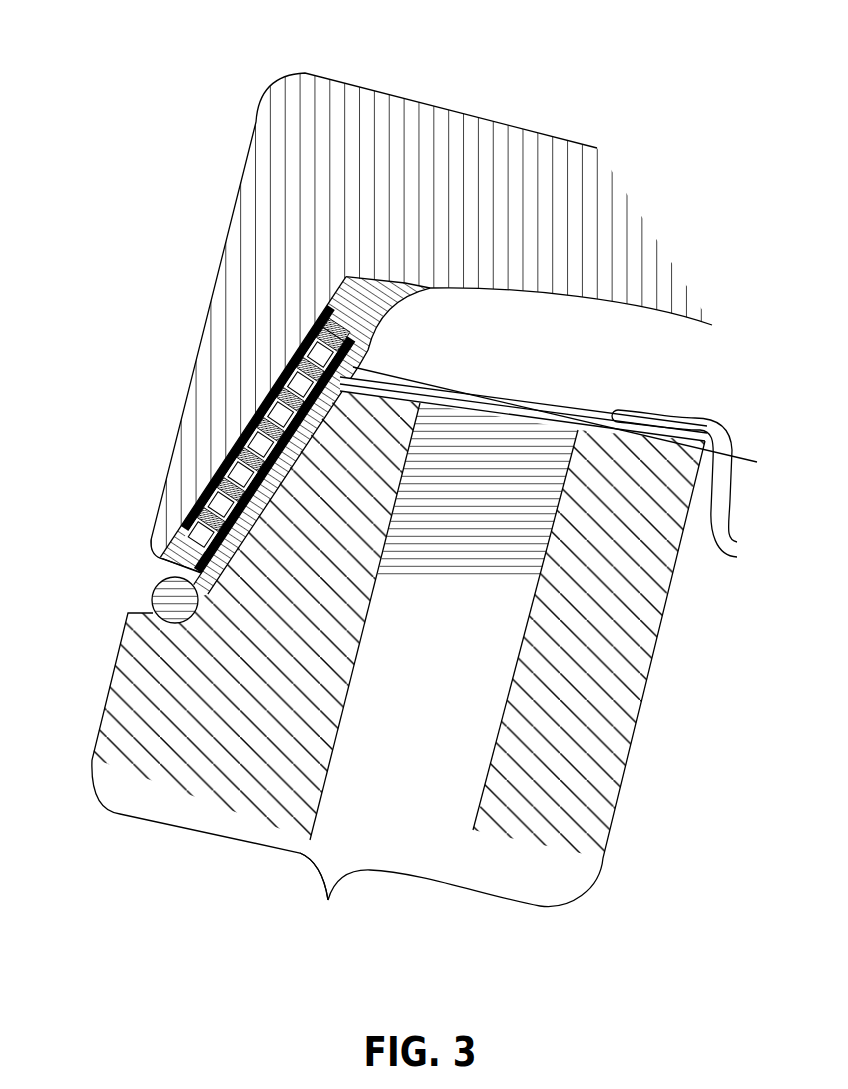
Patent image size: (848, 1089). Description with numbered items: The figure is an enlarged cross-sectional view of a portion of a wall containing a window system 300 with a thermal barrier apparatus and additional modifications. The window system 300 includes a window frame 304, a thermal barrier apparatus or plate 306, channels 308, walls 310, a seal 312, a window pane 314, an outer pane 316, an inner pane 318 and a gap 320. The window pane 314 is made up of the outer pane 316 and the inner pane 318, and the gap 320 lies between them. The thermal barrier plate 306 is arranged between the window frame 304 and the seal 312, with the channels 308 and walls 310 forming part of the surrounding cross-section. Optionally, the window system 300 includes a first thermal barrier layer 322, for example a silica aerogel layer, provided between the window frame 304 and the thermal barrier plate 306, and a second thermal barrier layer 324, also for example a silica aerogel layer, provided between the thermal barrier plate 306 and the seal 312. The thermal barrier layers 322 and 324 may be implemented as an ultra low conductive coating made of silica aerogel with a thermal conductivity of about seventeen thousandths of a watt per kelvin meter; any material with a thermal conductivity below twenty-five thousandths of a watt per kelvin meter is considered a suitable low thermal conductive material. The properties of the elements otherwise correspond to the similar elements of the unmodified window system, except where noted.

The window system 300 is at (112, 94).
The window frame 304 is at (243, 253).
The thermal barrier apparatus or plate 306 is at (158, 532).
The channels 308 is at (240, 540).
The walls 310 is at (270, 483).
The seal 312 is at (152, 590).
The window pane 314 is at (420, 892).
The outer pane 316 is at (132, 722).
The inner pane 318 is at (612, 660).
The gap 320 is at (460, 772).
The thermal barrier layer (first thermal barrier layer) 322 is at (220, 467).
The thermal barrier layer (second thermal barrier layer) 324 is at (303, 428).